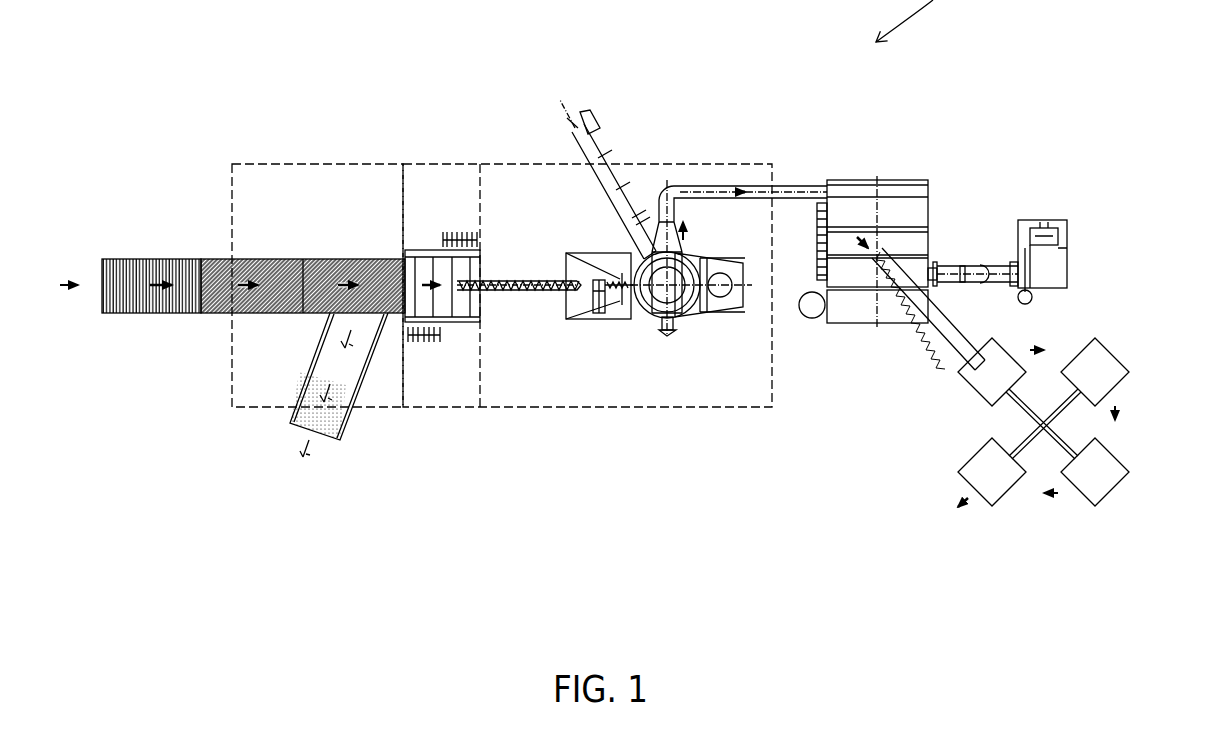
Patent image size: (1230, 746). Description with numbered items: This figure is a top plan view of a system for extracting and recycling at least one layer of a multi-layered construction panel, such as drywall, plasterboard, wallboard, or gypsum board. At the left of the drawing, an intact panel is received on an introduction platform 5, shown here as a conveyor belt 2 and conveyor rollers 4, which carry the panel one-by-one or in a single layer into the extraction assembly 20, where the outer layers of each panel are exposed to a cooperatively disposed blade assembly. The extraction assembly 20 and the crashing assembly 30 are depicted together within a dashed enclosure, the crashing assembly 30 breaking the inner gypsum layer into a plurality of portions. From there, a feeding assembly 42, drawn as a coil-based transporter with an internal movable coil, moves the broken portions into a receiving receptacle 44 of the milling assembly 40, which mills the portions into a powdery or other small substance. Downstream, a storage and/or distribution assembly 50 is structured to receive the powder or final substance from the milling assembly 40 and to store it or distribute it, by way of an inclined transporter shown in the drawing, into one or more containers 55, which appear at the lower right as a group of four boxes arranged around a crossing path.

The conveyor belt 2 is at (268, 267).
The conveyor rollers 4 is at (135, 313).
The introduction platform 5 is at (186, 208).
The extraction assembly 20 is at (467, 195).
The crashing assembly 30 is at (438, 198).
The milling assembly 40 is at (615, 306).
The feeding assembly 42 is at (530, 293).
The receiving receptacle 44 is at (610, 317).
The storage and/or distribution assembly 50 is at (952, 148).
The containers 55 is at (980, 376).